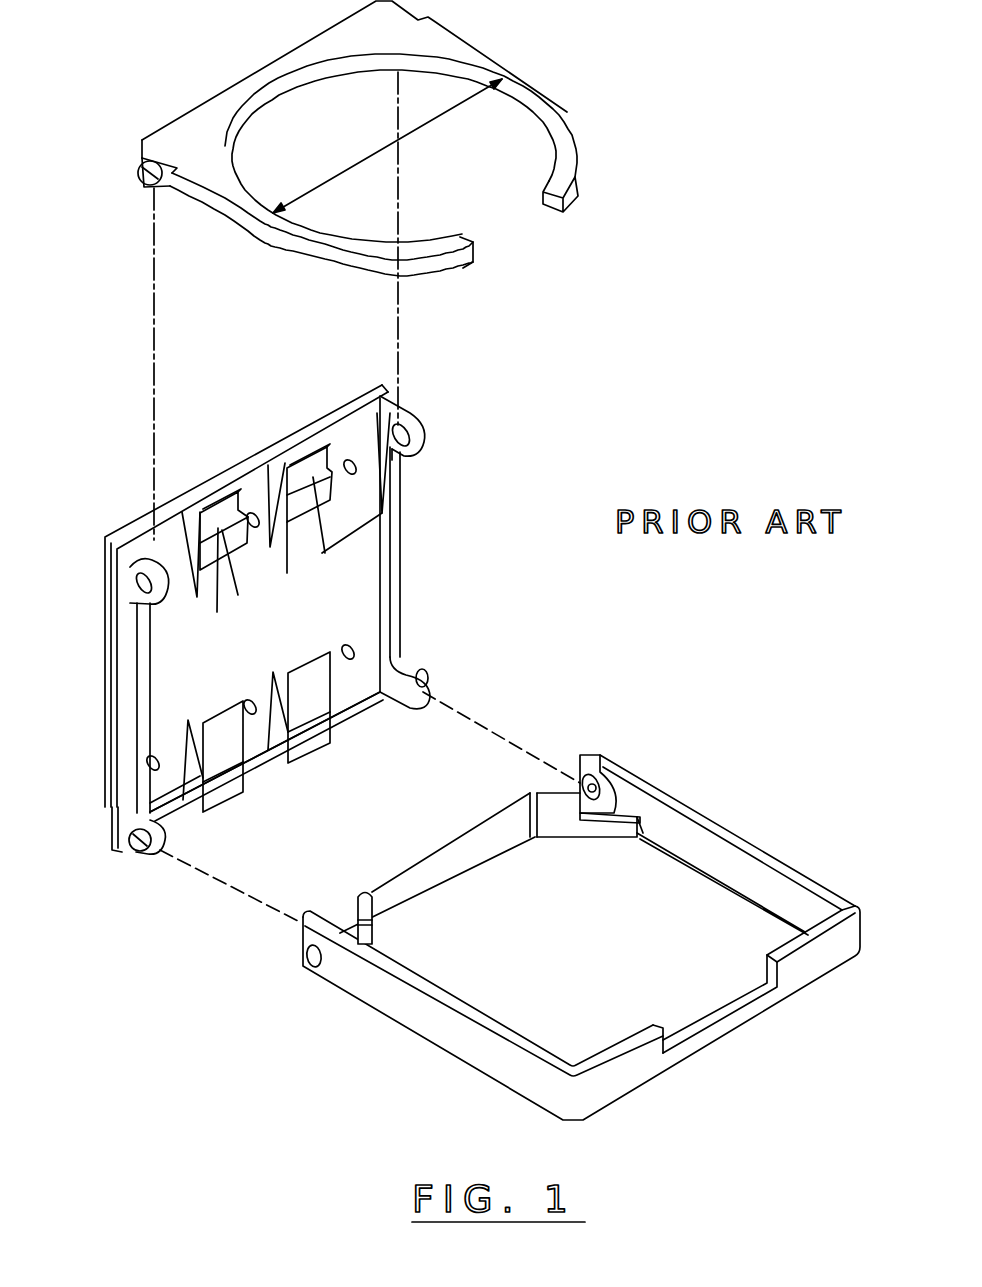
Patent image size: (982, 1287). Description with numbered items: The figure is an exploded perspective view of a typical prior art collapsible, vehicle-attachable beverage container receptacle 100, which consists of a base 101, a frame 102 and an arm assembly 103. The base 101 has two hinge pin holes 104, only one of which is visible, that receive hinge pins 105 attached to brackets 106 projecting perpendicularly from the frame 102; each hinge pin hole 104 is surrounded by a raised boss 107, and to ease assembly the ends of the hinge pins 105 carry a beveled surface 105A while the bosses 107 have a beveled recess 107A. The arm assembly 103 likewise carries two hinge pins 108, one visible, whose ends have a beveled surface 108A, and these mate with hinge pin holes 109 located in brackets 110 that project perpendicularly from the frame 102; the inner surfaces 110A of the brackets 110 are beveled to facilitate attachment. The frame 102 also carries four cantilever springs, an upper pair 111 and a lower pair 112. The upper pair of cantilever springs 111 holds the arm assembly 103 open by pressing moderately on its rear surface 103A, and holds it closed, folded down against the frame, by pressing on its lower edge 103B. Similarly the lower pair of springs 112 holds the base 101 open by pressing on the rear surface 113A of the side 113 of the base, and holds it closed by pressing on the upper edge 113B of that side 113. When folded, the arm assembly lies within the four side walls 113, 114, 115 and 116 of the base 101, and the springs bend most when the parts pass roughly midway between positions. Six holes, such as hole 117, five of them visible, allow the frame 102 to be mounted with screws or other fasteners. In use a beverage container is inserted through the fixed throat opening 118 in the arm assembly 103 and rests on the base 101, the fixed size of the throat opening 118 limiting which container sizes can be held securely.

The prior art receptacle 100 is at (150, 1011).
The base 101 is at (571, 952).
The frame 102 is at (353, 598).
The arm assembly 103 is at (397, 46).
The rear surface of the arm assembly 103A is at (222, 78).
The lower edge of the arm assembly 103B is at (277, 100).
The hinge pin hole 104 is at (577, 792).
The hinge pin 105 is at (428, 680).
The beveled surface 105A is at (140, 853).
The bracket 106 is at (410, 692).
The boss 107 is at (612, 802).
The beveled recess 107A is at (583, 760).
The hinge pin 108 is at (147, 163).
The beveled surface 108A is at (150, 187).
The hinge pin hole 109 is at (403, 450).
The bracket 110 is at (130, 563).
The inner surface of the bracket 110A is at (402, 418).
The upper pair of cantilever springs 111 is at (312, 475).
The lower pair of cantilever springs 112 is at (315, 732).
The side of the base 113 is at (395, 897).
The rear surface of the side 113A is at (378, 875).
The upper edge of the side 113B is at (457, 838).
The side wall 114 is at (710, 850).
The side wall 115 is at (654, 1057).
The side wall 116 is at (420, 1010).
The hole 117 is at (360, 643).
The throat opening 118 is at (407, 143).